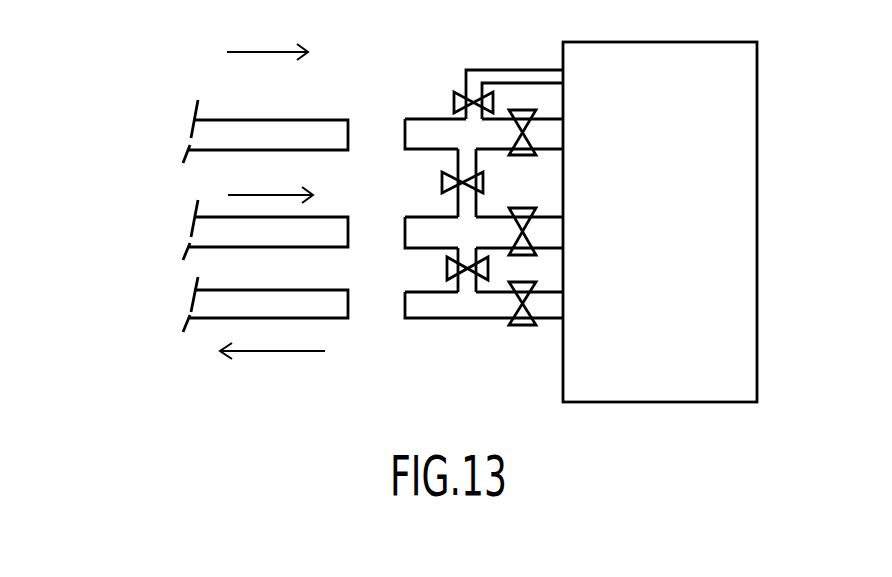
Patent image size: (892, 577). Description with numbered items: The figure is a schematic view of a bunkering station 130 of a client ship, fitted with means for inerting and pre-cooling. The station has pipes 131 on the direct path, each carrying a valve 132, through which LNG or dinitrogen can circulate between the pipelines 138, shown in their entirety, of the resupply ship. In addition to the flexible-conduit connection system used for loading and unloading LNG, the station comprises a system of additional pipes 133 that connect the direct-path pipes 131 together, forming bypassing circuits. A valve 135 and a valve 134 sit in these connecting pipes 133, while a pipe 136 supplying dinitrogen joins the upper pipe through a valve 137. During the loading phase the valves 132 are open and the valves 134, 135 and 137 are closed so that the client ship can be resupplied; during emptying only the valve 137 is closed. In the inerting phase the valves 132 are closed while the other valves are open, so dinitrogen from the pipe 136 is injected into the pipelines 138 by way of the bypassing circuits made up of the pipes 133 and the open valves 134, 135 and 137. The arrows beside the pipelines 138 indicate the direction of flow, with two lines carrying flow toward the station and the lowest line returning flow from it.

The bunkering station 130 is at (680, 377).
The pipes 131 is at (408, 119).
The valves 132 is at (525, 110).
The additional pipes 133 is at (452, 160).
The valve 134 is at (453, 272).
The valve 135 is at (452, 194).
The pipe 136 is at (511, 70).
The valve 137 is at (462, 99).
The pipelines 138 is at (148, 212).